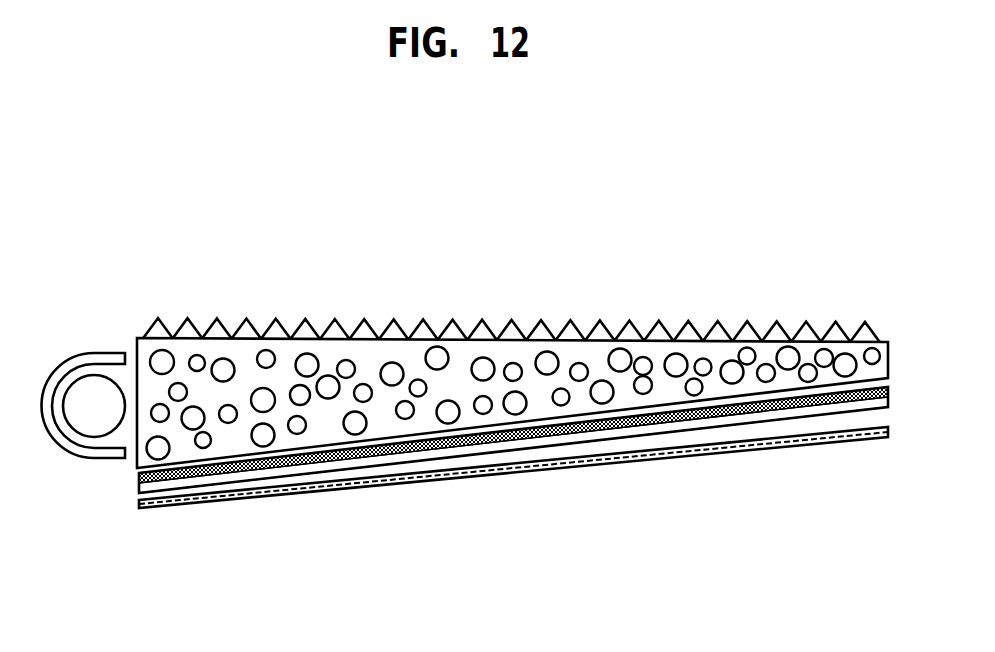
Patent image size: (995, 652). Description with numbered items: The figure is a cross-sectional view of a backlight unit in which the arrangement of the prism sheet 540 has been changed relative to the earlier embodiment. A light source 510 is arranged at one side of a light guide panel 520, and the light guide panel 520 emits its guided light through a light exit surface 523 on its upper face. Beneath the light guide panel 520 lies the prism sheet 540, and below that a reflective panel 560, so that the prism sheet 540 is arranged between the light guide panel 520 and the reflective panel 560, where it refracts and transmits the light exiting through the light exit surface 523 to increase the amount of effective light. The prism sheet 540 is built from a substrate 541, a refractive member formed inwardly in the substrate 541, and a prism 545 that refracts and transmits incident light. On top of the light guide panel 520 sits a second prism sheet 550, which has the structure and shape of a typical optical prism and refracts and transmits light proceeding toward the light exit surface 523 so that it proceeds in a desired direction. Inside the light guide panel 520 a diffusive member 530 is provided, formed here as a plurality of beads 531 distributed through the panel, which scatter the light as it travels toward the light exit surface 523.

The light source 510 is at (72, 468).
The light guide panel 520 is at (127, 470).
The light exit surface 523 is at (520, 337).
The diffusive member 530 is at (151, 352).
The beads 531 is at (193, 418).
The prism sheet 540 is at (513, 470).
The substrate 541 is at (508, 443).
The prism 545 is at (413, 450).
The second prism sheet 550 is at (630, 333).
The reflective panel 560 is at (668, 447).